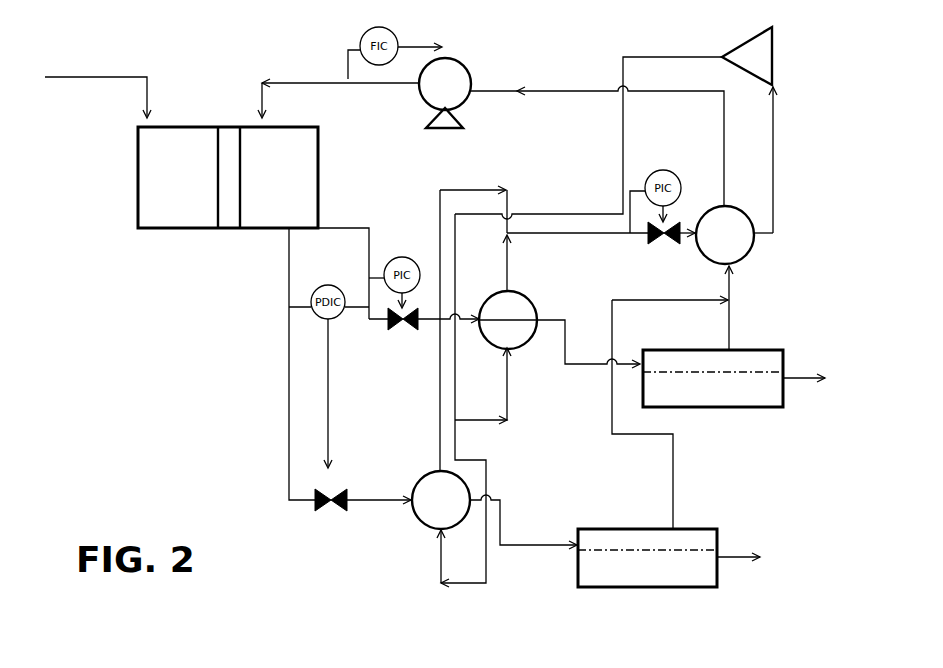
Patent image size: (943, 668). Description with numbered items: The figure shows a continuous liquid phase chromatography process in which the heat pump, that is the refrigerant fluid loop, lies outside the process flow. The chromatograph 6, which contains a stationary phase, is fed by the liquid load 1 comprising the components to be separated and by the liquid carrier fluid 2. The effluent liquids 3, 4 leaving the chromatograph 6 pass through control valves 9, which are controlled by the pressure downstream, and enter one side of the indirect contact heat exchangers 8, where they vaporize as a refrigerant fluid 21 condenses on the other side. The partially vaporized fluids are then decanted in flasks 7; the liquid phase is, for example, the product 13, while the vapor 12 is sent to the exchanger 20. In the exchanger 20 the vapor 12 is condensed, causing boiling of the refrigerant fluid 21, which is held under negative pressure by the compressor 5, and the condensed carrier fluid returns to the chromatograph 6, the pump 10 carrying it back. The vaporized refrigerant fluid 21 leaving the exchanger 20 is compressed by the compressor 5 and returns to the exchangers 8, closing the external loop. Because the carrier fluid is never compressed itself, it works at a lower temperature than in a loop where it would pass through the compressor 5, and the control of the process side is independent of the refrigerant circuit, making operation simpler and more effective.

The liquid load 1 is at (117, 78).
The liquid carrier fluid 2 is at (306, 83).
The effluent liquid 3 is at (340, 226).
The effluent liquid 4 is at (289, 430).
The compressor 5 is at (760, 57).
The chromatograph 6 is at (183, 213).
The flask 7 is at (688, 365).
The indirect contact heat exchanger 8 is at (518, 312).
The control valve 9 is at (400, 330).
The pump 10 is at (507, 91).
The vapor 12 is at (733, 292).
The product 13 is at (808, 377).
The exchanger 20 is at (718, 218).
The refrigerant fluid 21 is at (468, 190).